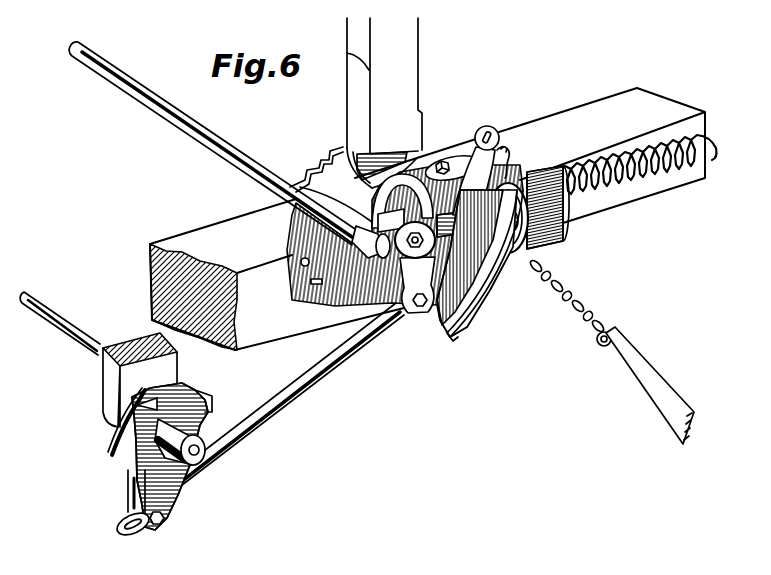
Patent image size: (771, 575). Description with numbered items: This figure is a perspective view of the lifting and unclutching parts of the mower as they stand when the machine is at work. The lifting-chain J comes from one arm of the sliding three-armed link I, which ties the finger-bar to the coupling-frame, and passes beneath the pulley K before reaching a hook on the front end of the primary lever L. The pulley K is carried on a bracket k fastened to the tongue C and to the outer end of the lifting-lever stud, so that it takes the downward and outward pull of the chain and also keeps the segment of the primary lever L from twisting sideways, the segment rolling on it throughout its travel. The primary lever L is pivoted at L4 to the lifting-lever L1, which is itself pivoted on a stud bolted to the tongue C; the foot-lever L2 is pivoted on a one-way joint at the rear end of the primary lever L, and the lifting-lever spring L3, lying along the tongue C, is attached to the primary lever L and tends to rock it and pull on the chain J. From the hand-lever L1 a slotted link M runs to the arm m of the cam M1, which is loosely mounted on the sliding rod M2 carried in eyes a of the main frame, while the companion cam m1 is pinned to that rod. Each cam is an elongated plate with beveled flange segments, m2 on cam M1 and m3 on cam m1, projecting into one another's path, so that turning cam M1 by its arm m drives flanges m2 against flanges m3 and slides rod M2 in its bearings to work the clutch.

The tongue C is at (427, 219).
The primary lever L is at (477, 272).
The lifting-lever L1 is at (432, 318).
The foot-lever L2 is at (263, 150).
The lifting-lever spring L3 is at (643, 186).
The pivot of primary lever L4 is at (457, 195).
The bracket k is at (458, 164).
The pulley K is at (568, 226).
The lifting-chain J is at (566, 266).
The sliding three-armed link I is at (645, 385).
The link M is at (317, 386).
The cam M1 is at (198, 390).
The sliding rod M2 is at (68, 348).
The arm m is at (173, 503).
The companion cam m1 is at (113, 445).
The projecting flanges m2 is at (143, 400).
The projecting flanges m3 is at (112, 438).
The eyes a is at (140, 380).